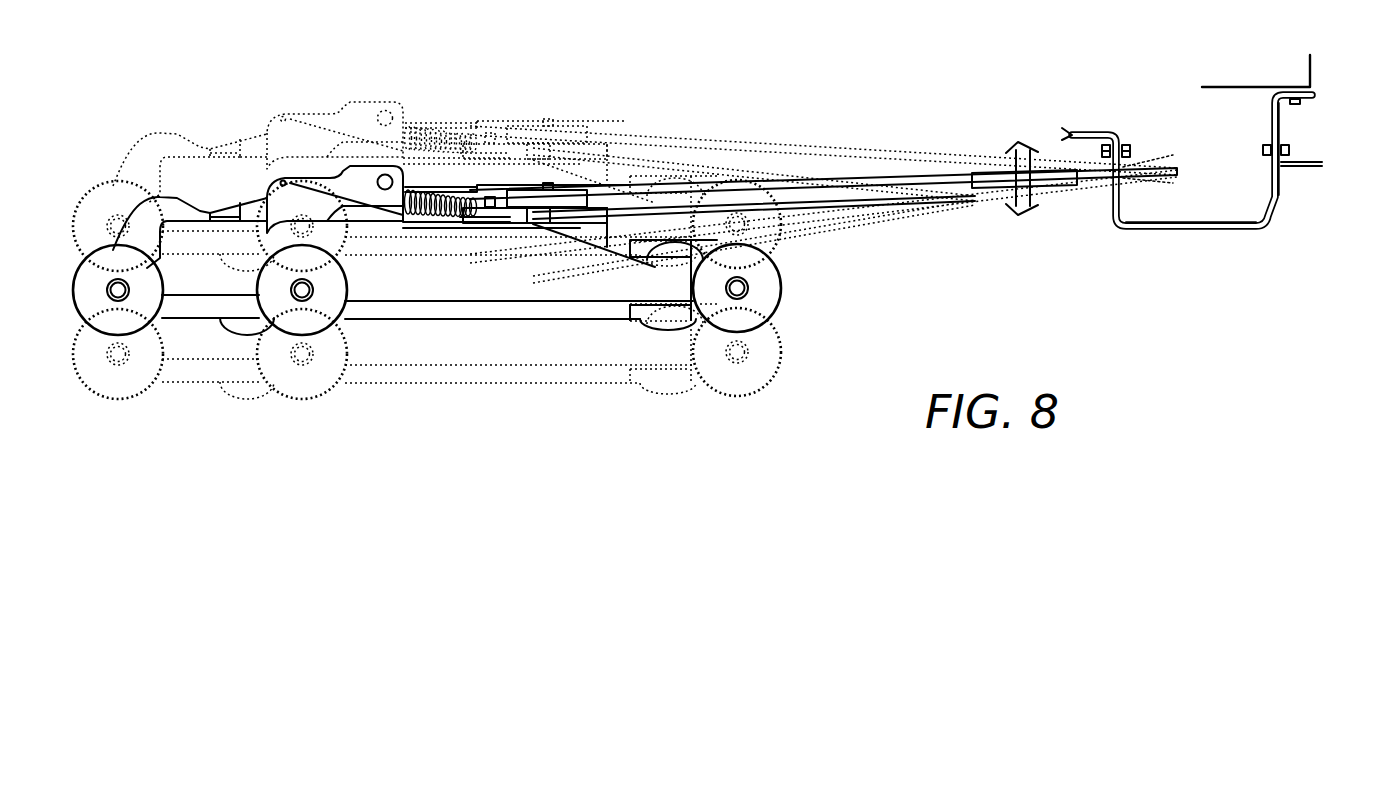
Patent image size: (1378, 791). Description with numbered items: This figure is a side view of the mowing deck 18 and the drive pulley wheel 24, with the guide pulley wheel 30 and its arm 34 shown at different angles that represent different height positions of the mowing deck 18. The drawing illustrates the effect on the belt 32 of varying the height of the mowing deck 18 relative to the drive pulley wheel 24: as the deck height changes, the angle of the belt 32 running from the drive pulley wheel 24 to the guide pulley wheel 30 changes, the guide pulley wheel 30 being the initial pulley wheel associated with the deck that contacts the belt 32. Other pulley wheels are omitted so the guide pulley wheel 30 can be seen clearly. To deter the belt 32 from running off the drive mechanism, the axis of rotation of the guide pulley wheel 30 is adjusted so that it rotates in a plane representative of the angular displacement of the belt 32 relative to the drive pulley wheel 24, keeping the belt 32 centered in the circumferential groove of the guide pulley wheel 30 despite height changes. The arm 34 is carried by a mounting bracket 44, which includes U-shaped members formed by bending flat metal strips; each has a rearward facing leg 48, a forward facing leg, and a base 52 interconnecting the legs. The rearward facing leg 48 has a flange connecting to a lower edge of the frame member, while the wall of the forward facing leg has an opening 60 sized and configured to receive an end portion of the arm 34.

The mowing deck 18 is at (142, 217).
The drive pulley wheel 24 is at (993, 170).
The guide pulley wheel 30 is at (573, 197).
The belt 32 is at (867, 183).
The arm 34 is at (810, 197).
The mounting bracket 44 is at (1217, 230).
The rearward facing leg 48 is at (1280, 200).
The base 52 is at (1177, 231).
The opening 60 is at (1111, 189).